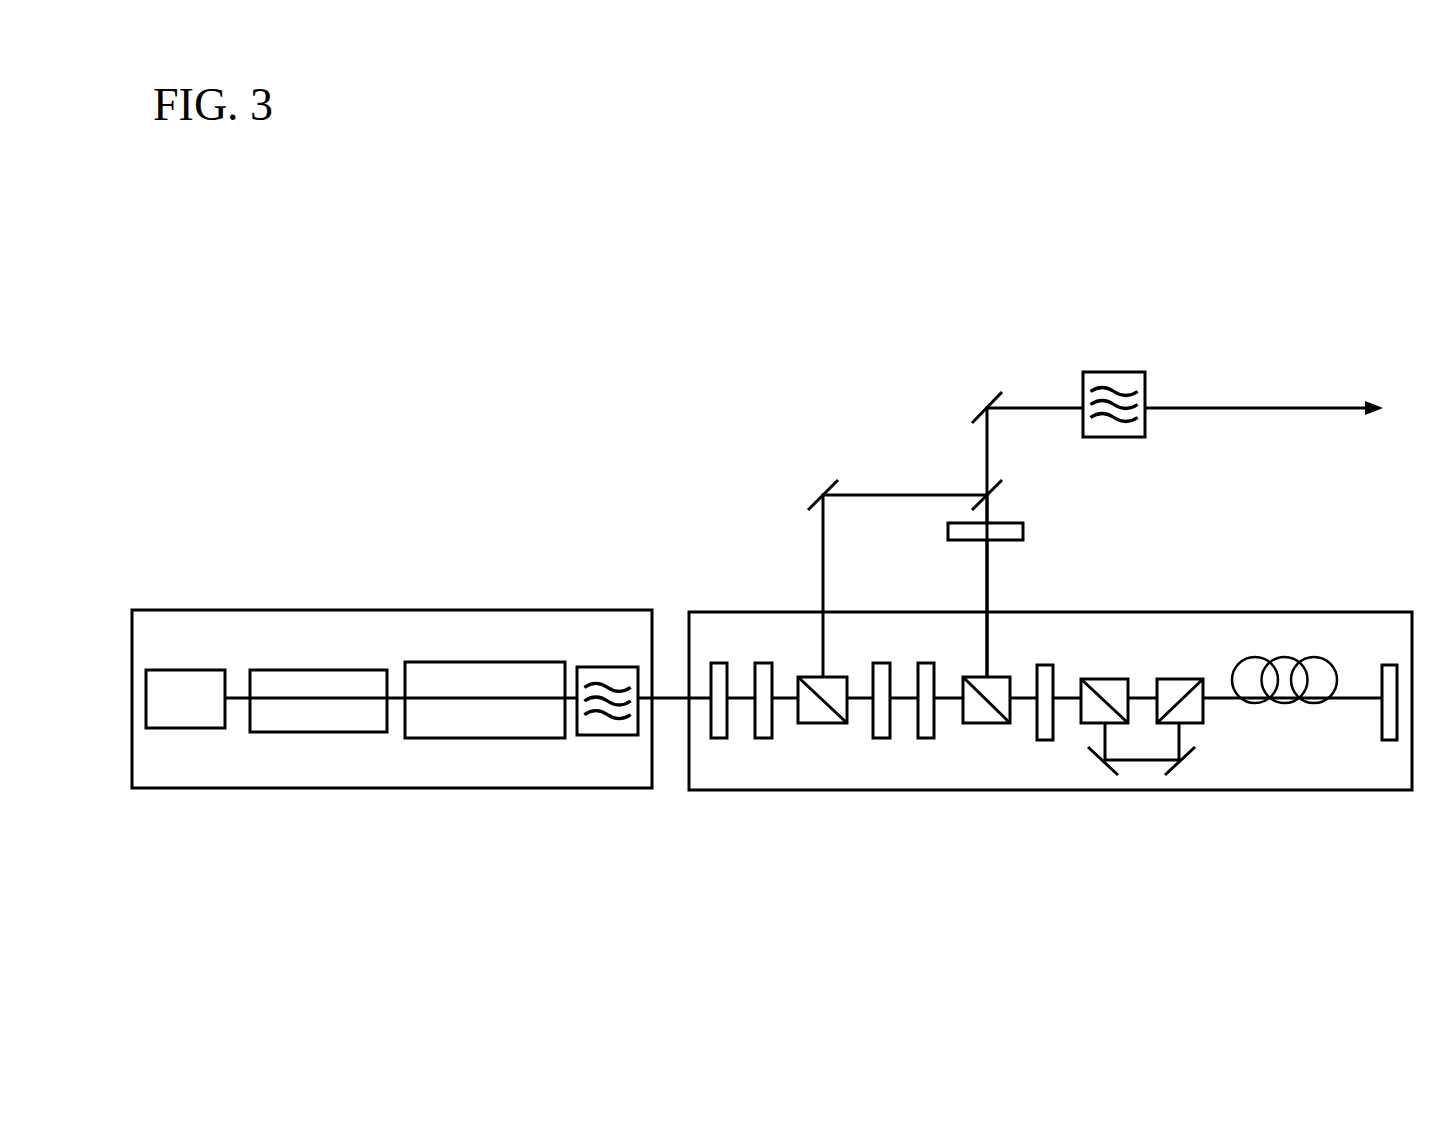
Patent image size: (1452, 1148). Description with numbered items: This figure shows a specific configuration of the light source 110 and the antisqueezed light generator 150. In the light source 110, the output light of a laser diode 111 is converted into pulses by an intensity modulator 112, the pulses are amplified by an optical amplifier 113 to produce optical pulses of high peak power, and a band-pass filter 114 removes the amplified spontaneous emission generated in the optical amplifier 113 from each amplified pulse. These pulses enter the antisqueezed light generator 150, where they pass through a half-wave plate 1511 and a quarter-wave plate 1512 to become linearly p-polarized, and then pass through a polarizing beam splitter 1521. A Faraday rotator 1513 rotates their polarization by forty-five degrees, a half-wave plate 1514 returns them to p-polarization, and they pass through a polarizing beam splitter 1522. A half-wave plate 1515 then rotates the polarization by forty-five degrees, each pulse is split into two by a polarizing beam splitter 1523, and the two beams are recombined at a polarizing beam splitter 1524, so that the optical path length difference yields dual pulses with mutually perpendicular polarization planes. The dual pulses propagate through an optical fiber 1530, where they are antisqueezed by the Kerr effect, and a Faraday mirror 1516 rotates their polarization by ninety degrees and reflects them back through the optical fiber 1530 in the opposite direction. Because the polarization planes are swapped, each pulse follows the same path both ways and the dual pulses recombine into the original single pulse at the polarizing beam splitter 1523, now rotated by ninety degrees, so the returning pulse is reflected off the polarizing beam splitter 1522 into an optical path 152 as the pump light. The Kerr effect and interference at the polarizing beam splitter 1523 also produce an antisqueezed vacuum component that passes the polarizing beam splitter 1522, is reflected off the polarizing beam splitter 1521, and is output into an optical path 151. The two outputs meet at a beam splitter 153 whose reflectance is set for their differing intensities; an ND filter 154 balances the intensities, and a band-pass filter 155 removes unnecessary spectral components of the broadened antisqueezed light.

The light source 110 is at (387, 790).
The laser diode 111 is at (190, 670).
The intensity modulator 112 is at (320, 670).
The optical amplifier 113 is at (483, 662).
The band-pass filter 114 is at (613, 667).
The antisqueezed light generator 150 is at (1120, 792).
The optical path 151 is at (822, 553).
The optical path 152 is at (990, 580).
The beam splitter 153 is at (985, 480).
The ND filter 154 is at (1000, 523).
The band-pass filter 155 is at (1115, 372).
The λ/2 waveplate 1511 is at (720, 663).
The λ/4 waveplate 1512 is at (765, 663).
The Faraday rotator 1513 is at (883, 663).
The λ/2 waveplate 1514 is at (925, 663).
The λ/2 waveplate 1515 is at (1043, 665).
The Faraday mirror 1516 is at (1385, 665).
The polarizing beam splitter 1521 is at (817, 677).
The polarizing beam splitter 1522 is at (992, 677).
The polarizing beam splitter 1523 is at (1127, 679).
The polarizing beam splitter 1524 is at (1203, 679).
The optical fiber 1530 is at (1290, 657).